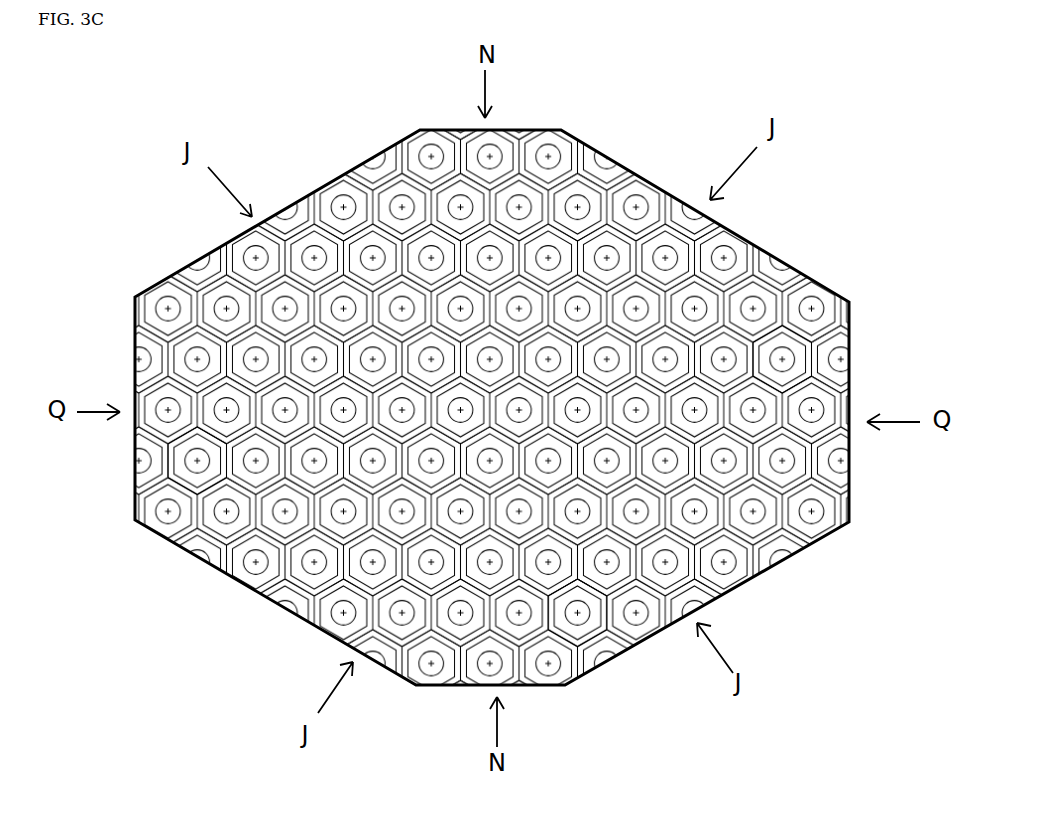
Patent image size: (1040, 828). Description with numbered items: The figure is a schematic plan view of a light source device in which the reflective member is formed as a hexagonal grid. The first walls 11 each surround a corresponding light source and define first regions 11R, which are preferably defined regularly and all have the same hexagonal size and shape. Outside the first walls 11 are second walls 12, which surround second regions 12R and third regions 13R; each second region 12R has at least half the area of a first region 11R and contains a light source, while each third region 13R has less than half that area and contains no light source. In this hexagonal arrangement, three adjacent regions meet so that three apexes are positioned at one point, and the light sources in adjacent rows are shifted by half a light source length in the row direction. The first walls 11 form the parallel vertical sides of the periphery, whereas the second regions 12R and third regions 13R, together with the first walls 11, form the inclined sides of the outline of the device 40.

The honeycomb structure 40 is at (850, 272).
The first walls 11 is at (808, 360).
The first regions 11R is at (197, 475).
The second walls 12 is at (523, 155).
The second regions 12R is at (333, 183).
The third regions 13R is at (600, 167).